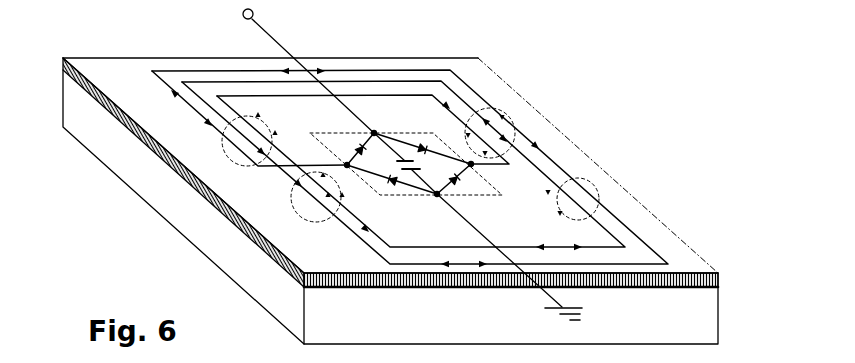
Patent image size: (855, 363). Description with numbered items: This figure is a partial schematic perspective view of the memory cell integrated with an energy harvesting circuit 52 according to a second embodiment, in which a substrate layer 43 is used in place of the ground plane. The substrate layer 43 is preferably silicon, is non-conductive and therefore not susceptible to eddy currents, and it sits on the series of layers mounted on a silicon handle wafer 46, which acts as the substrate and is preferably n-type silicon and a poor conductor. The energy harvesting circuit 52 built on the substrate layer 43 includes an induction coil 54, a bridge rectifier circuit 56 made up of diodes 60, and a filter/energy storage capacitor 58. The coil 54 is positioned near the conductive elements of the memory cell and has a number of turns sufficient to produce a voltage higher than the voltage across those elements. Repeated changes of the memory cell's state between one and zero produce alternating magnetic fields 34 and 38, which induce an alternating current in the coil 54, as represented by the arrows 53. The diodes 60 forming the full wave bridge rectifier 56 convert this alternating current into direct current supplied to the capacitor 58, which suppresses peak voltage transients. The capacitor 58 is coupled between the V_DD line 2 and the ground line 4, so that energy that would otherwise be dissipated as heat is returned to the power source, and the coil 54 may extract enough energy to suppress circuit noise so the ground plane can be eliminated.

The V_DD line 2 is at (270, 37).
The ground line 4 is at (553, 300).
The magnetic field 34 is at (292, 212).
The magnetic field 38 is at (510, 113).
The substrate layer 43 is at (100, 58).
The silicon handle wafer 46 is at (122, 180).
The energy harvesting circuit 52 is at (182, 70).
The arrows 53 is at (208, 123).
The induction coil 54 is at (368, 82).
The bridge rectifier circuit 56 is at (480, 195).
The filter/energy storage capacitor 58 is at (407, 159).
The diodes 60 is at (349, 146).